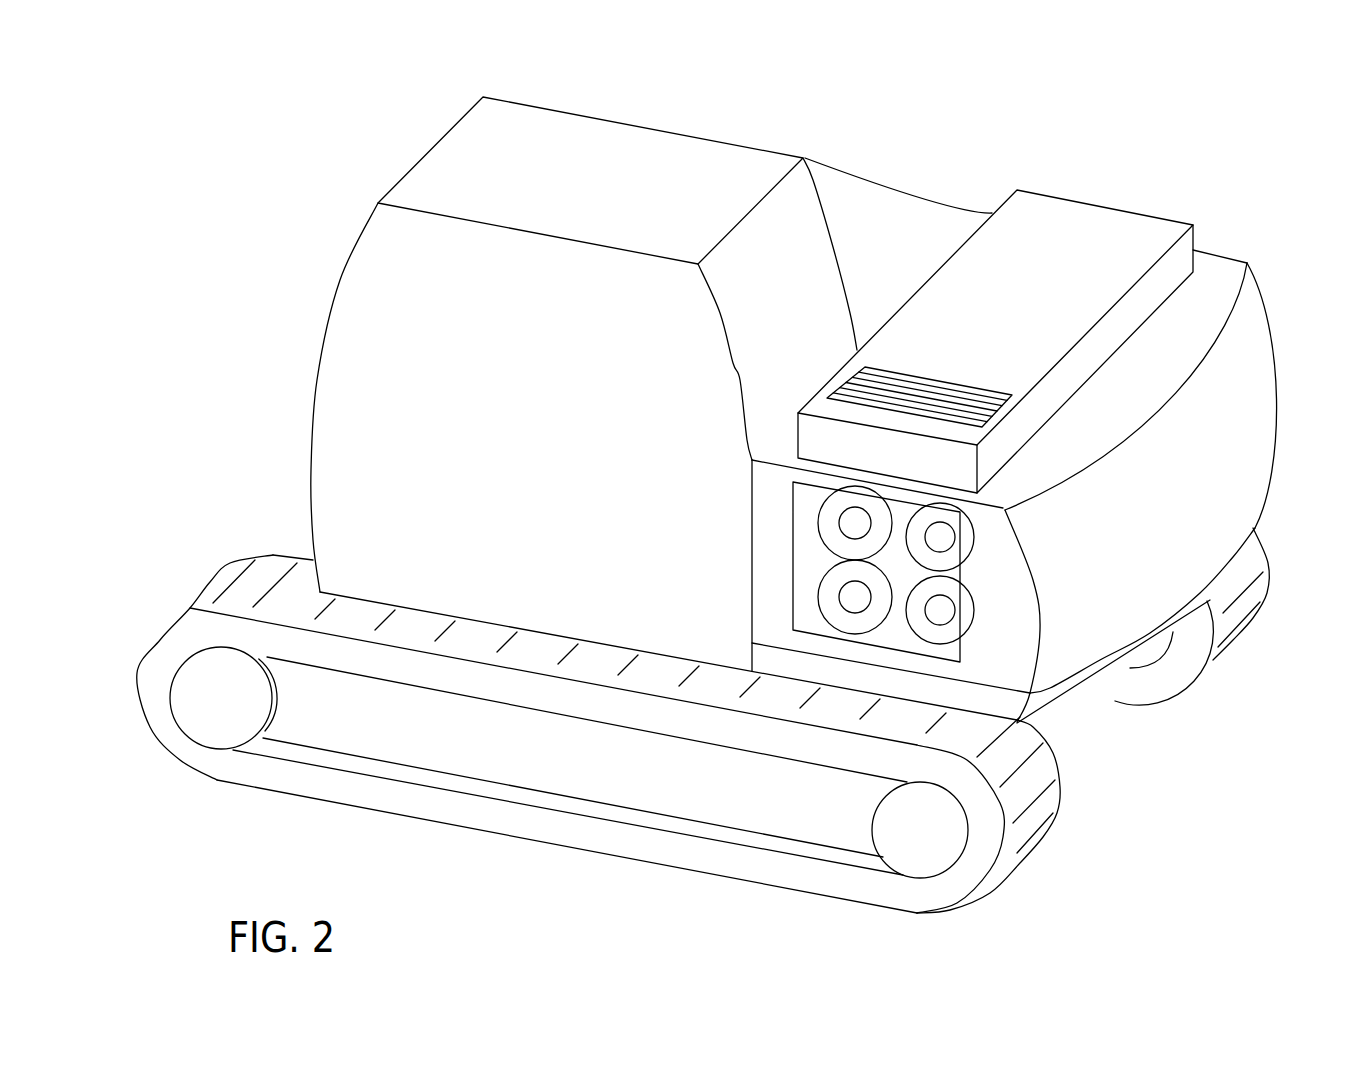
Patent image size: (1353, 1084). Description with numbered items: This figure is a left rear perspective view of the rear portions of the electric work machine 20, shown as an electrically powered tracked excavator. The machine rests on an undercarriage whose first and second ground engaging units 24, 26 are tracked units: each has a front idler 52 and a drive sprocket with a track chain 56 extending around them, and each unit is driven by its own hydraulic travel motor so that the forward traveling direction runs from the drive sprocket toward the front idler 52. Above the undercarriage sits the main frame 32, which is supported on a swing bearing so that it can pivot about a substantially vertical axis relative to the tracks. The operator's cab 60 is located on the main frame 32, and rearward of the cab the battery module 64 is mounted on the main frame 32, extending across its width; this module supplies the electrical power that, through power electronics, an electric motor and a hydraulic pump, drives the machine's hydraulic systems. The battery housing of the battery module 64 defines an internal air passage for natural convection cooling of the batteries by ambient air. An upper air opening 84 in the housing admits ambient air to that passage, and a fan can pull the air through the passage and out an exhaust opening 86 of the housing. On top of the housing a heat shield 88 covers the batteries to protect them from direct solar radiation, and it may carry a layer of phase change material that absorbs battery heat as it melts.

The electric work machine 20 is at (1145, 105).
The first ground engaging unit 24 is at (1015, 840).
The second ground engaging unit 26 is at (1233, 620).
The main frame 32 is at (1050, 697).
The front idler 52 is at (215, 696).
The track chain 56 is at (213, 593).
The operator's cab 60 is at (603, 160).
The battery module 64 is at (953, 560).
The upper air opening 84 is at (937, 398).
The exhaust opening 86 is at (812, 609).
The heat shield 88 is at (1095, 245).